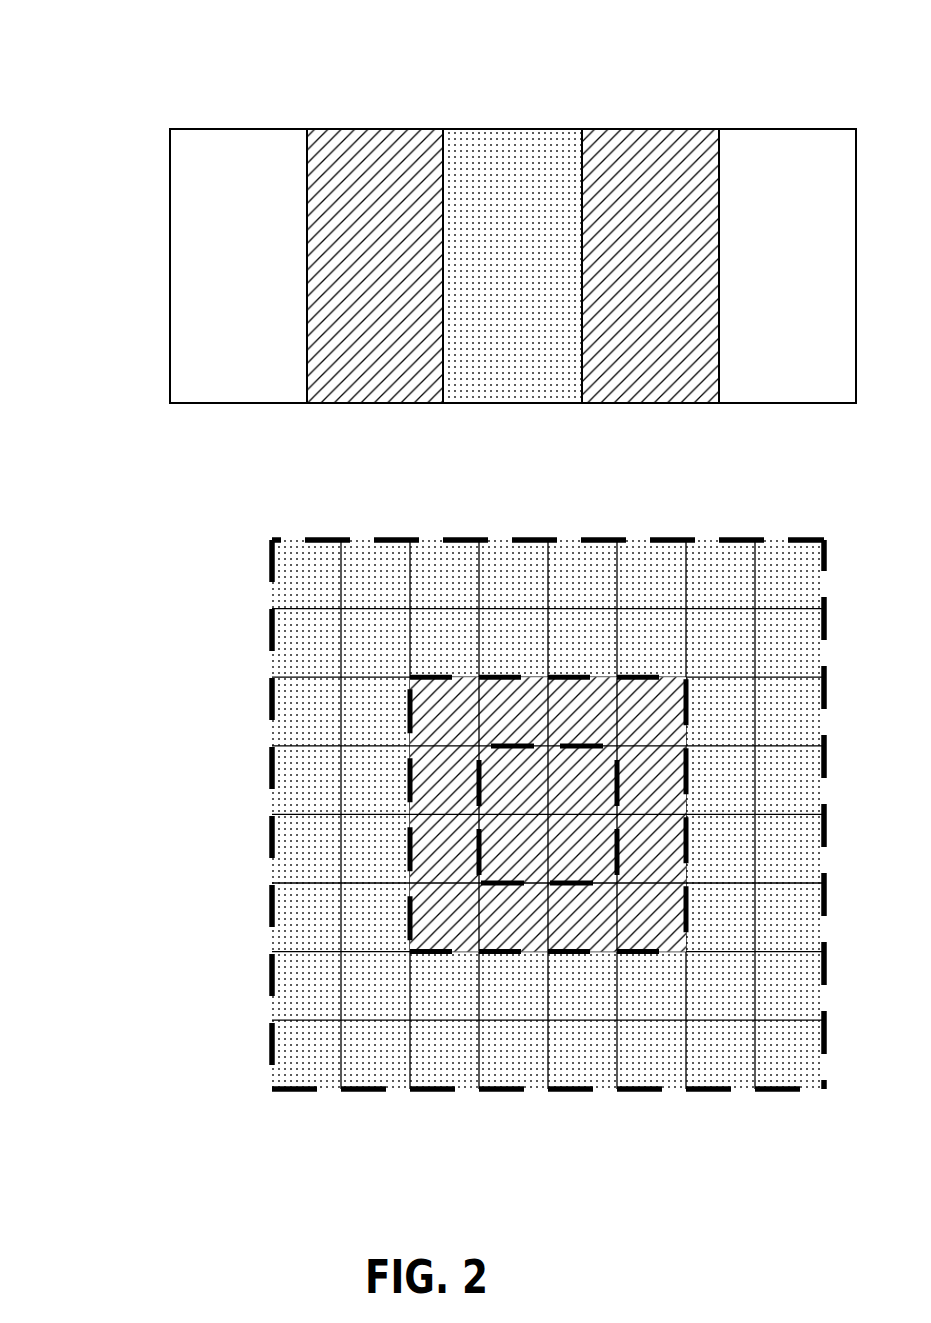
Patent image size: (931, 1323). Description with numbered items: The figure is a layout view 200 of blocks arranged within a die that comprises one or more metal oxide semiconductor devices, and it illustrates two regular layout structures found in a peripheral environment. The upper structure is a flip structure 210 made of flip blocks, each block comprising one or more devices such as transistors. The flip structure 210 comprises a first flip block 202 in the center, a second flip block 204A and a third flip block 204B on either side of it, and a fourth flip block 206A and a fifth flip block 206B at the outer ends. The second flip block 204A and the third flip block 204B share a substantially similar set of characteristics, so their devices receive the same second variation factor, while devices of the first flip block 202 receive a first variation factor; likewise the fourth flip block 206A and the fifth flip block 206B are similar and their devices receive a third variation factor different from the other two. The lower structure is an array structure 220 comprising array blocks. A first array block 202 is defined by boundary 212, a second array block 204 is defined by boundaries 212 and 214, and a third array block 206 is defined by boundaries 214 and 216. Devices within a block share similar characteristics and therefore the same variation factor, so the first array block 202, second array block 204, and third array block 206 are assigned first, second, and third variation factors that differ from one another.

The layout view 200 is at (128, 50).
The first flip block / first array block 202 is at (476, 129).
The second array block 204 is at (442, 918).
The second flip block 204A is at (341, 129).
The third flip block 204B is at (614, 129).
The third array block 206 is at (443, 987).
The fourth flip block 206A is at (204, 129).
The fifth flip block 206B is at (751, 129).
The flip structure 210 is at (128, 256).
The boundary 212 is at (478, 746).
The boundary 214 is at (410, 746).
The boundary 216 is at (272, 745).
The array structure 220 is at (128, 804).